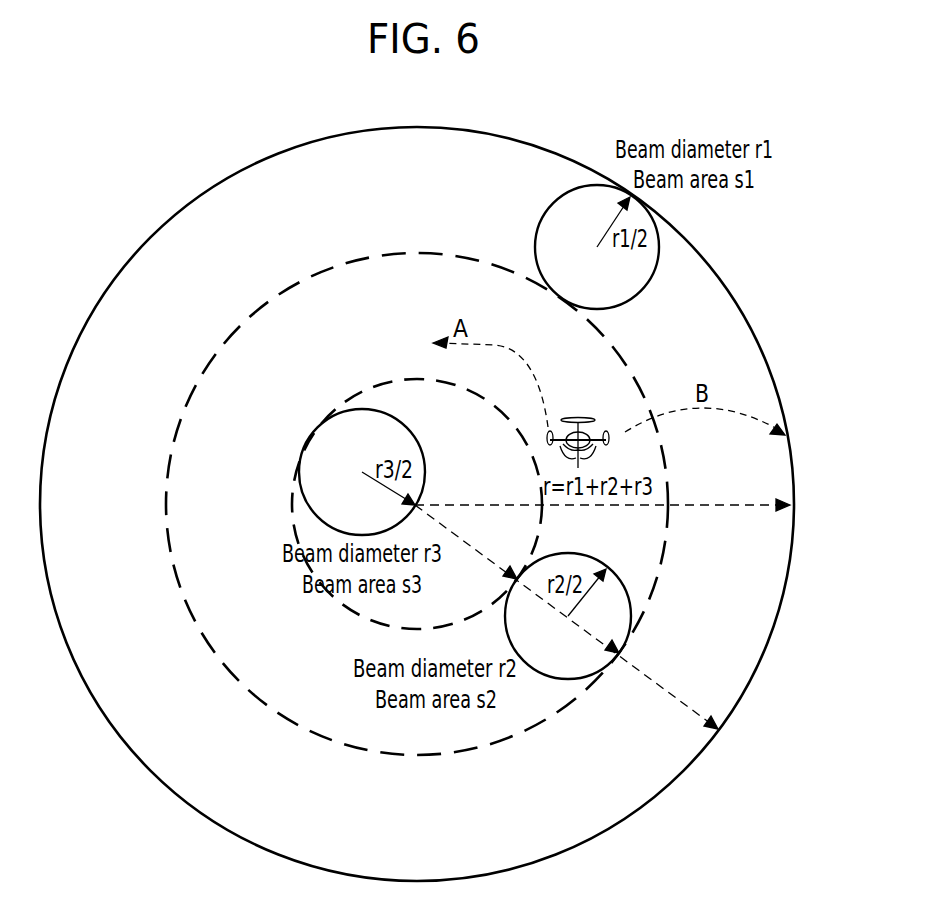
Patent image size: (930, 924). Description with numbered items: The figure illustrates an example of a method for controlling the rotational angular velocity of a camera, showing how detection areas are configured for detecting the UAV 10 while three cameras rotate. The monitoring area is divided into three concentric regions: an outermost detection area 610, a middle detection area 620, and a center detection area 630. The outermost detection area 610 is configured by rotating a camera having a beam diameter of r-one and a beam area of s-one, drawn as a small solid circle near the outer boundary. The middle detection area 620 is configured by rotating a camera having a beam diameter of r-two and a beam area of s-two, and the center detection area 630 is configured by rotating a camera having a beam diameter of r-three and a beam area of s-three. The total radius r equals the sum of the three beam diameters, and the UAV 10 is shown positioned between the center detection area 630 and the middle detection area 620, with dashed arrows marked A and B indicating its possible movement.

The outermost detection area 610 is at (553, 164).
The middle detection area 620 is at (637, 552).
The center detection area 630 is at (398, 395).
The UAV 10 is at (587, 427).